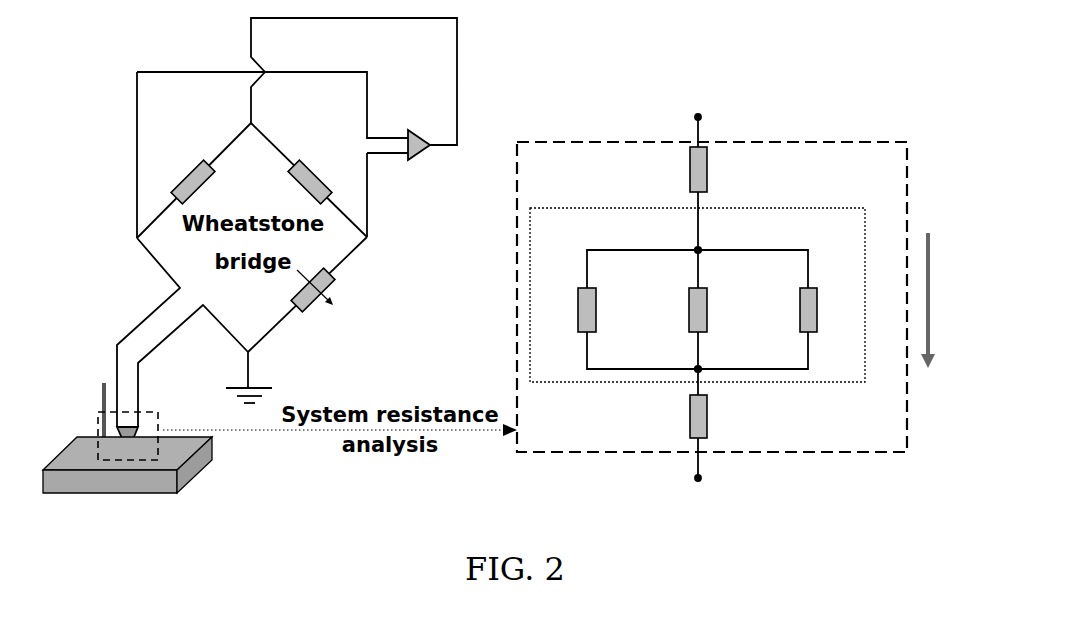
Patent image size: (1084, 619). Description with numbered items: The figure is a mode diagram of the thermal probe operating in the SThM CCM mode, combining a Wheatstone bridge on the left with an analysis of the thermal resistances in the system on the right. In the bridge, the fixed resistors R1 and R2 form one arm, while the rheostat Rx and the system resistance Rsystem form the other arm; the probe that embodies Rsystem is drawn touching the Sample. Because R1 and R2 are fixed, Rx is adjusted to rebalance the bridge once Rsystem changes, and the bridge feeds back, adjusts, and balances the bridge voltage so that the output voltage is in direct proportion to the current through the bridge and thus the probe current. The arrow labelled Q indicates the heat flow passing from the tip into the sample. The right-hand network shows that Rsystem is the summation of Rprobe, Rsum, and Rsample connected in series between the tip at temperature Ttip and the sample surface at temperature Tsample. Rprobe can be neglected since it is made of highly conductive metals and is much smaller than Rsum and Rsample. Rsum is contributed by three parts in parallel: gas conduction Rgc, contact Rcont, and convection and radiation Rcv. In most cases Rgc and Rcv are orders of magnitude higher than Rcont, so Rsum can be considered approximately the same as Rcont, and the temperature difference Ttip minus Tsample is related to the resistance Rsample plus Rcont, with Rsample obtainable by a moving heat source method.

The fixed resistor R1 is at (191, 176).
The fixed resistor R2 is at (310, 175).
The rheostat Rx is at (320, 305).
The system resistance Rsystem is at (502, 301).
The probe resistance Rprobe is at (667, 169).
The summed contact resistance Rsum is at (697, 295).
The gas conduction resistance Rgc is at (567, 310).
The contact resistance Rcont is at (670, 310).
The convection and radiation resistance Rcv is at (781, 310).
The sample resistance Rsample is at (661, 416).
The tip temperature Ttip is at (729, 181).
The sample temperature Tsample is at (742, 431).
The heat flux Q is at (520, 343).
The sample Sample is at (127, 465).